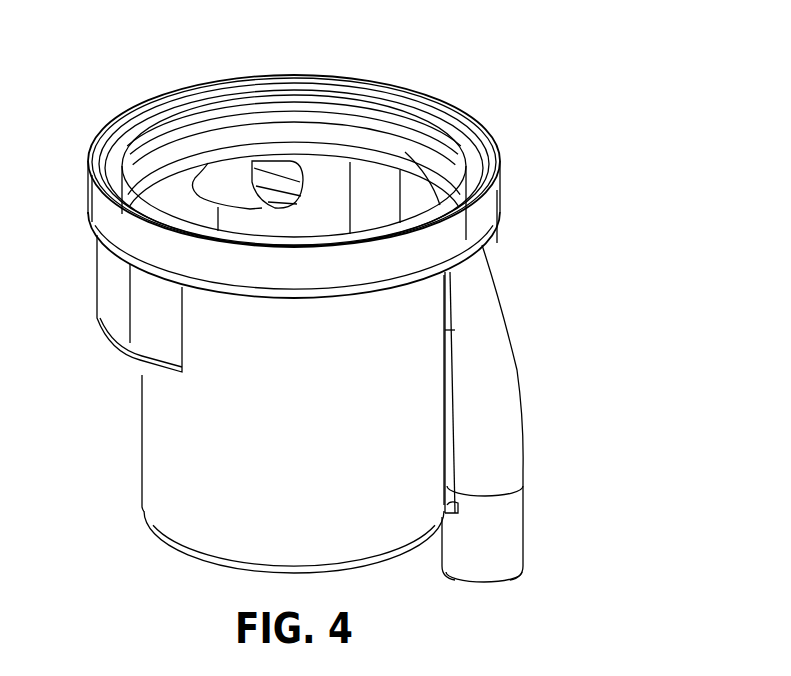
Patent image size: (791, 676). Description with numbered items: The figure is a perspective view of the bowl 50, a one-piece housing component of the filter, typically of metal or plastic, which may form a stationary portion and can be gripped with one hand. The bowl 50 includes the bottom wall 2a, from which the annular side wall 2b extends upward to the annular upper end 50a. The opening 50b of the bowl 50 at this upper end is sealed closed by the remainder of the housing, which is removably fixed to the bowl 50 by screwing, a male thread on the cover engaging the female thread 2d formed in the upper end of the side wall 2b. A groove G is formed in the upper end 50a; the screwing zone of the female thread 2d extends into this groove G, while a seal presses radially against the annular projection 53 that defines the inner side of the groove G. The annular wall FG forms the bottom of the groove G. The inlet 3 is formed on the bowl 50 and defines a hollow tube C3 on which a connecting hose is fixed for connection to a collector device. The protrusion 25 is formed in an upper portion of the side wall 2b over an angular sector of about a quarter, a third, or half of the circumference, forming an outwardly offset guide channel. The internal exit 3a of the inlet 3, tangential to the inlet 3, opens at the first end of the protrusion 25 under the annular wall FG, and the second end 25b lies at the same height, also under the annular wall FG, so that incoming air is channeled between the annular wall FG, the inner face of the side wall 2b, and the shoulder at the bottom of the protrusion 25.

The bowl 50 is at (238, 439).
The upper end of the bowl 50a is at (187, 90).
The opening of the bowl 50b is at (407, 137).
The bottom wall 2a is at (177, 548).
The side wall 2b is at (146, 382).
The female thread 2d is at (113, 132).
The protrusion 25 is at (97, 285).
The second end of the protrusion 25b is at (133, 303).
The inlet 3 is at (486, 263).
The internal exit of the inlet 3a is at (297, 167).
The hollow tube C3 is at (518, 556).
The groove G is at (467, 147).
The annular wall FG is at (208, 163).
The annular projection 53 is at (467, 192).